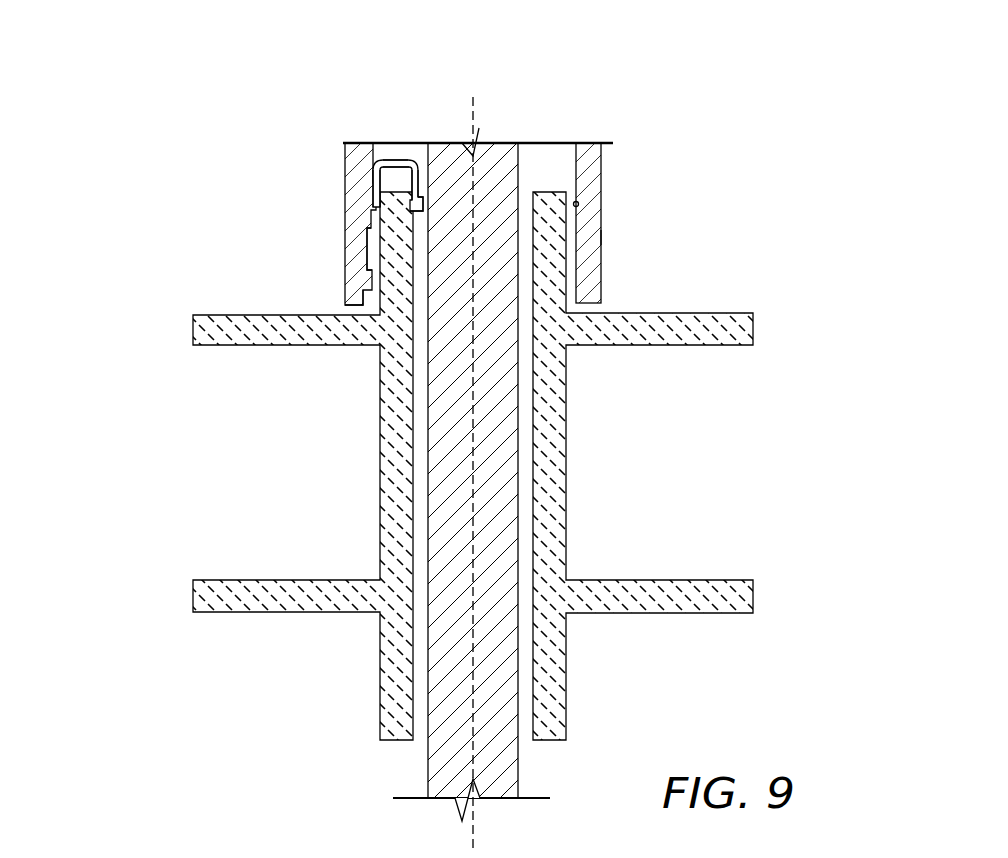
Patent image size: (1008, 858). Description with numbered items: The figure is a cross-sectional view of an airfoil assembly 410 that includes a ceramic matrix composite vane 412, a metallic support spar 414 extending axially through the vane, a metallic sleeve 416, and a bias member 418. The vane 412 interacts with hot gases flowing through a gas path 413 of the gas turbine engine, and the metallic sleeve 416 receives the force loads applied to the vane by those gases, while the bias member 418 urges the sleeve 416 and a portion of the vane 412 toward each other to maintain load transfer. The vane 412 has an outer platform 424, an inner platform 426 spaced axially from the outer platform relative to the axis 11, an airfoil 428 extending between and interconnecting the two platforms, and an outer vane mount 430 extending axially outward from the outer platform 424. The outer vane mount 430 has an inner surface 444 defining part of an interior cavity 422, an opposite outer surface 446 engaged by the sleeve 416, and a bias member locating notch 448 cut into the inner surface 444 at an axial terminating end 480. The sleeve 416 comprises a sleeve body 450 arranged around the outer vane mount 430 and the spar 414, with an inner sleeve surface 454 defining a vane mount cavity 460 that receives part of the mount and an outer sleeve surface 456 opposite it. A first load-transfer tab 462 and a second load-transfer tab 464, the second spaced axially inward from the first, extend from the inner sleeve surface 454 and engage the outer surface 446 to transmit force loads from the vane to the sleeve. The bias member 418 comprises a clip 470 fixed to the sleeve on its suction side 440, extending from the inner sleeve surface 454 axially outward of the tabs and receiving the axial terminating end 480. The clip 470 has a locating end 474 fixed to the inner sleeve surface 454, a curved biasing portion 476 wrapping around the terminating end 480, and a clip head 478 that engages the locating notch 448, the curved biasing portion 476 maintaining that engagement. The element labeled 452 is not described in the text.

The airfoil assembly 410 is at (146, 170).
The ceramic matrix composite vane 412 is at (745, 383).
The gas path 413 is at (293, 477).
The metallic support spar 414 is at (537, 146).
The metallic sleeve 416 is at (690, 216).
The bias member 418 is at (424, 150).
The interior cavity 422 is at (418, 743).
The outer platform 424 is at (738, 311).
The inner platform 426 is at (738, 617).
The airfoil 428 is at (578, 488).
The outer vane mount 430 is at (531, 208).
The suction side 440 is at (378, 508).
The inner surface 444 is at (559, 184).
The outer surface 446 is at (573, 200).
The bias member locating notch 448 is at (418, 220).
The sleeve body 450 is at (618, 290).
The groove 452 is at (362, 237).
The inner sleeve surface 454 is at (580, 205).
The outer sleeve surface 456 is at (603, 236).
The vane mount cavity 460 is at (513, 142).
The first load-transfer tab 462 is at (356, 165).
The second load-transfer tab 464 is at (377, 303).
The clip 470 is at (397, 150).
The locating end 474 is at (372, 190).
The curved biasing portion 476 is at (420, 157).
The clip head 478 is at (432, 195).
The axial terminating end 480 is at (394, 186).
The axis 11 is at (476, 829).